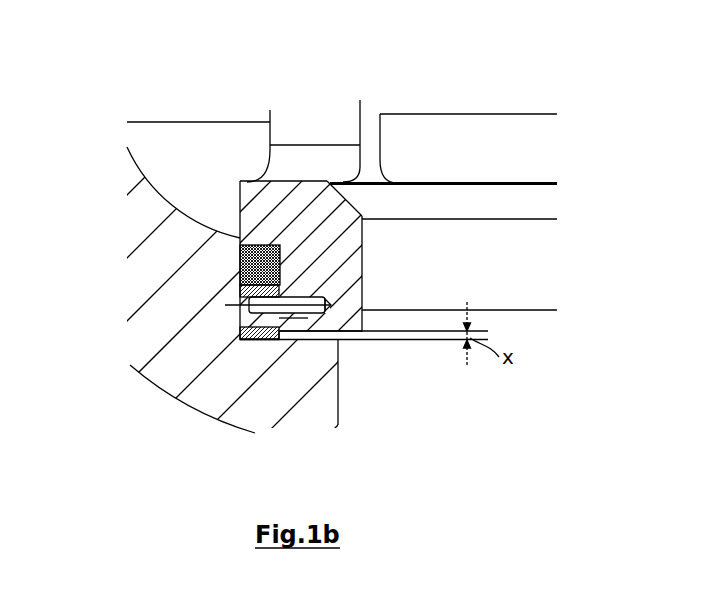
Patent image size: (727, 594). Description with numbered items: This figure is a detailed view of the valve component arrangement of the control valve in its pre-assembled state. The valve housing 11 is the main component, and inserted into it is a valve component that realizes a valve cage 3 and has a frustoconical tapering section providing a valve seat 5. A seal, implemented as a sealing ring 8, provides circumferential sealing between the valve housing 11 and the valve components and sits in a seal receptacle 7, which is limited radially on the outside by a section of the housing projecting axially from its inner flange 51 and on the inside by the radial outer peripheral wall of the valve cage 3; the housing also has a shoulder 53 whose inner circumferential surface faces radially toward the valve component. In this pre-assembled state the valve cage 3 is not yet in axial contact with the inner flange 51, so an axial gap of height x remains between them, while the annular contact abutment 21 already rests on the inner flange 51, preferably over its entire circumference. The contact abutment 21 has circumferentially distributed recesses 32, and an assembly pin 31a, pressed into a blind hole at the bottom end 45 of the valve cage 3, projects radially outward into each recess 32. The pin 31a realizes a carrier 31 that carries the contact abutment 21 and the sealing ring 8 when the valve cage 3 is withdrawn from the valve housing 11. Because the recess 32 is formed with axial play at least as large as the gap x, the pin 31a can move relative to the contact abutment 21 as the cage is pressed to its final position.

The valve cage 3 is at (370, 131).
The valve seat 5 is at (350, 200).
The seal receptacle 7 is at (233, 262).
The sealing ring 8 is at (250, 244).
The valve housing 11 is at (150, 215).
The contact abutment 21 is at (226, 306).
The carrier 31 is at (291, 300).
The assembly pin 31a is at (297, 271).
The recess 32 is at (245, 298).
The bottom end 45 is at (348, 215).
The inner flange 51 is at (325, 384).
The shoulder 53 is at (230, 236).